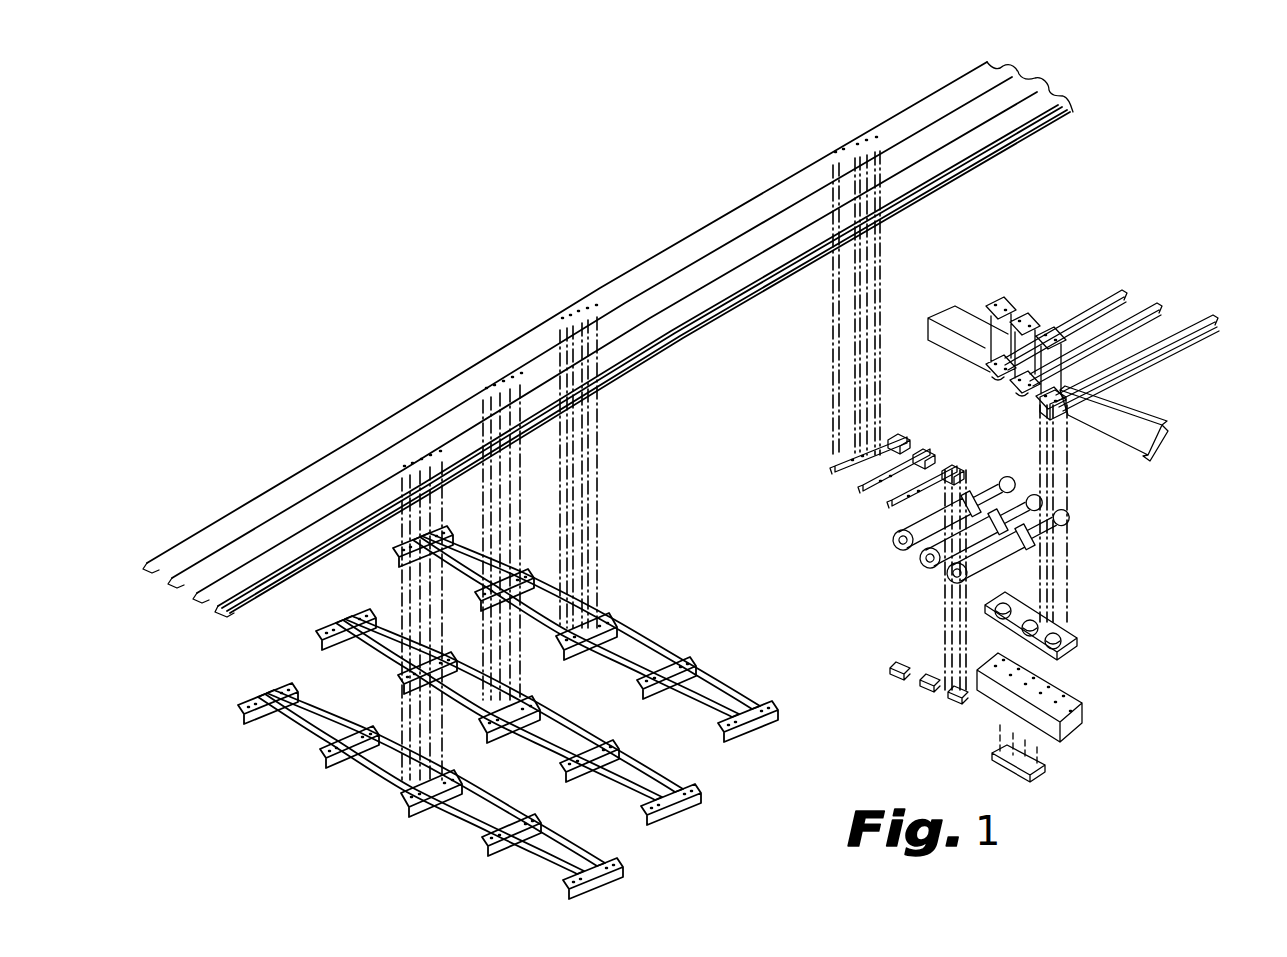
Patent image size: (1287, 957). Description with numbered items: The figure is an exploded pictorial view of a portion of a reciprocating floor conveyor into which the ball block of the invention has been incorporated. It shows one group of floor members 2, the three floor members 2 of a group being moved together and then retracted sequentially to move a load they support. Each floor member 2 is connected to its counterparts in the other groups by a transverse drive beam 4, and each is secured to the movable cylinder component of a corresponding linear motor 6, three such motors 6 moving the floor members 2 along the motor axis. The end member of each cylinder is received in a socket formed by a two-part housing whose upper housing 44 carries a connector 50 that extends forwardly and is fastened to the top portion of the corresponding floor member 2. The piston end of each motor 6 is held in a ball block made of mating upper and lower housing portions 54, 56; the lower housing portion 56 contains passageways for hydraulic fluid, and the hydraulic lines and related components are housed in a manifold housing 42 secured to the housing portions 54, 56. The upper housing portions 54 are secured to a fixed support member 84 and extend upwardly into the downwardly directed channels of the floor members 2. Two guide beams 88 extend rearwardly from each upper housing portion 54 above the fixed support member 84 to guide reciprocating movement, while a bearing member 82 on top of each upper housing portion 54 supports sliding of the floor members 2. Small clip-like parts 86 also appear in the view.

The floor members 2 is at (277, 564).
The transverse drive beam 4 is at (292, 746).
The linear motor 6 is at (950, 587).
The manifold housing 42 is at (1080, 705).
The upper housing 44 is at (933, 463).
The connector 50 is at (905, 505).
The upper housing portion 54 is at (1063, 407).
The lower housing portion 56 is at (1000, 613).
The bearing member 82 is at (997, 304).
The fixed support member 84 is at (1131, 420).
The clips 86 is at (933, 683).
The guide beams 88 is at (1211, 314).